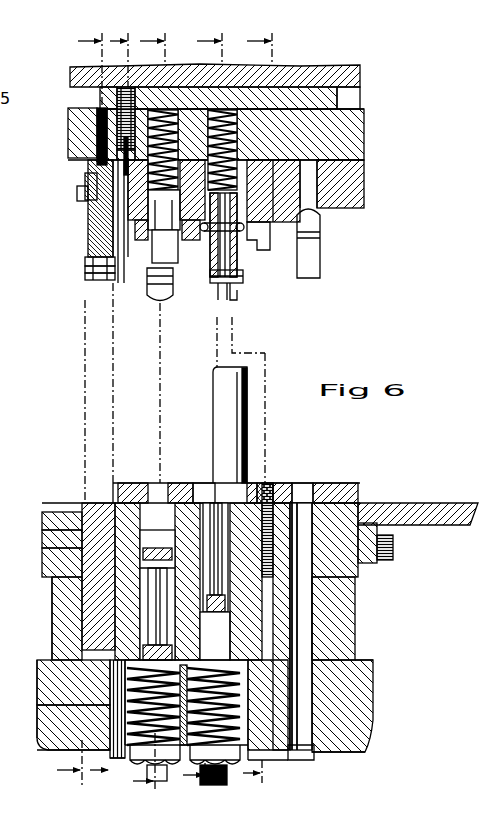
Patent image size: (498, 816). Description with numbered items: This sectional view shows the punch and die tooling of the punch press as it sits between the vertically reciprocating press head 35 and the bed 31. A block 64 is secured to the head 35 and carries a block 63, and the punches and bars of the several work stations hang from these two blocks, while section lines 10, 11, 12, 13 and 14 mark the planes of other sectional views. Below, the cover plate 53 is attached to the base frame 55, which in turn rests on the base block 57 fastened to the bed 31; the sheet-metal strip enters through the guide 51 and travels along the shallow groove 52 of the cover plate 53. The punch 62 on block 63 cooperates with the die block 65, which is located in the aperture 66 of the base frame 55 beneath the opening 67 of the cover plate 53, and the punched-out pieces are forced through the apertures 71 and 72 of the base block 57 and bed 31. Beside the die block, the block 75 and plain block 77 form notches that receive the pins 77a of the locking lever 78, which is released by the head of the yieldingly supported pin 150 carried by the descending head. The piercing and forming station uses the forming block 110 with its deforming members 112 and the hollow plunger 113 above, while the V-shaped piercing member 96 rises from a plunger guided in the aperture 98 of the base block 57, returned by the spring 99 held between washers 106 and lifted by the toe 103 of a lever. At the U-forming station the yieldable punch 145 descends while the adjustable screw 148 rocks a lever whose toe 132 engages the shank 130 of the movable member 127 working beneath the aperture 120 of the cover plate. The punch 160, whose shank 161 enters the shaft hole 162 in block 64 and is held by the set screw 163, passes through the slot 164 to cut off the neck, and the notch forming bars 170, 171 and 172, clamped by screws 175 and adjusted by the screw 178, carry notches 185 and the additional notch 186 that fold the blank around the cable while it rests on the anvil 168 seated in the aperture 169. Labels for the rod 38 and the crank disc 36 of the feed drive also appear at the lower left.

The section line 10 is at (65, 400).
The section line 11 is at (110, 760).
The section line 12 is at (137, 405).
The section line 13 is at (211, 405).
The section line 14 is at (265, 402).
The press head 35 is at (360, 76).
The block 64 is at (364, 132).
The block 63 is at (364, 188).
The punch 62 is at (320, 259).
The shaft hole 162 is at (117, 97).
The screw 178 is at (97, 136).
The set screw 163 is at (124, 140).
The shank 161 is at (121, 172).
The screws 175 is at (77, 192).
The notch forming bar 170 is at (100, 214).
The notch forming bar 171 is at (97, 232).
The notch forming bar 172 is at (95, 255).
The notches 185 is at (97, 270).
The additional notched portion 186 is at (97, 284).
The punch 160 is at (156, 265).
The adjustable screw member 148 is at (158, 303).
The yieldable punch 145 is at (215, 282).
The hollow plunger 113 is at (243, 268).
The forming block 110 is at (243, 280).
The pin 150 is at (240, 292).
The deforming members 112 is at (233, 302).
The aperture 120 is at (156, 490).
The movable member 127 is at (163, 503).
The V-shaped piercing member 96 is at (208, 500).
The slot 164 is at (118, 490).
The anvil 168 is at (98, 503).
The plain block 77 is at (253, 483).
The pins 77a is at (283, 497).
The locking lever 78 is at (262, 497).
The block 75 is at (322, 483).
The cover plate 53 is at (345, 497).
The shallow groove 52 is at (362, 497).
The guide 51 is at (412, 503).
The base frame 55 is at (42, 527).
The aperture 66 is at (42, 538).
The opening 67 is at (42, 557).
The bed 31 is at (45, 568).
The toe 132 is at (148, 588).
The shank 130 is at (143, 612).
The aperture 169 is at (115, 637).
The aperture 98 is at (225, 600).
The toe 103 is at (207, 612).
The washers 106 is at (237, 660).
The die block 65 is at (320, 562).
The aperture 71 is at (307, 624).
The support block 57 is at (345, 645).
The aperture 72 is at (307, 700).
The spring 99 is at (325, 752).
The rod 38 is at (123, 675).
The crank disc 36 is at (110, 700).